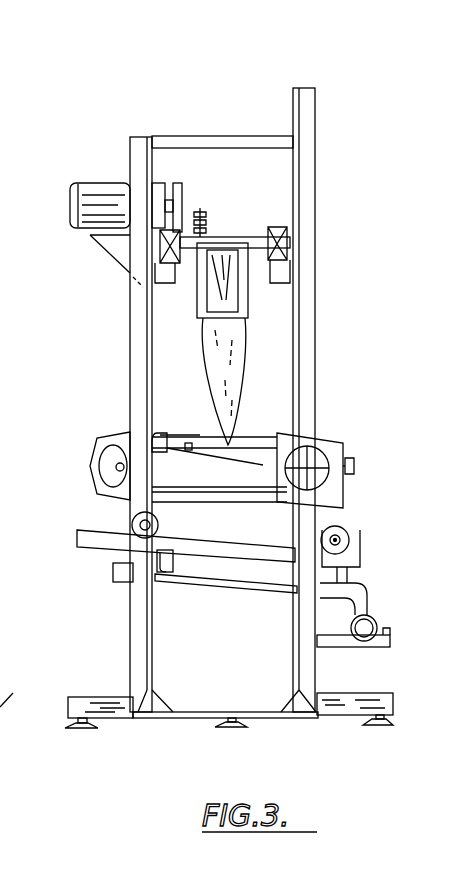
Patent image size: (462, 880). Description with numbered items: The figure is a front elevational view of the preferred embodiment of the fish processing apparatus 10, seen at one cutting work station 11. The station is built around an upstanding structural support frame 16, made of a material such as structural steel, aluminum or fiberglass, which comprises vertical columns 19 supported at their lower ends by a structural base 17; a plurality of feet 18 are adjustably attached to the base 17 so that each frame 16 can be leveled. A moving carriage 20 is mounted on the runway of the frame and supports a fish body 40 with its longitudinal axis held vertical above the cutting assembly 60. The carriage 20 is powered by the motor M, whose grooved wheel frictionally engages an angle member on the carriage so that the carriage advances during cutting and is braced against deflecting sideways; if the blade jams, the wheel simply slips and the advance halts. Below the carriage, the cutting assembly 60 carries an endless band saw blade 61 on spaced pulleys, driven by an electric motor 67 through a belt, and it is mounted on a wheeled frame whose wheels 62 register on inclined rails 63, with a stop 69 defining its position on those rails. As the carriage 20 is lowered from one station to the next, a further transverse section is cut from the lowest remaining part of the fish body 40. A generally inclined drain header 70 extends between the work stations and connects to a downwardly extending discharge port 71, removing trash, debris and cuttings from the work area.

The apparatus 10 is at (0, 67).
The cutting work station 11 is at (173, 138).
The motor M is at (93, 200).
The structural support frame 16 is at (130, 358).
The vertical column 19 is at (315, 373).
The carriage 20 is at (265, 196).
The fish body 40 is at (248, 347).
The cutting assembly 60 is at (90, 466).
The band saw blade 61 is at (178, 435).
The wheel 62 is at (160, 520).
The inclined rail 63 is at (108, 540).
The electric motor 67 is at (265, 463).
The stop 69 is at (362, 548).
The drain header 70 is at (368, 643).
The discharge port 71 is at (193, 578).
The structural base 17 is at (100, 697).
The feet 18 is at (80, 728).